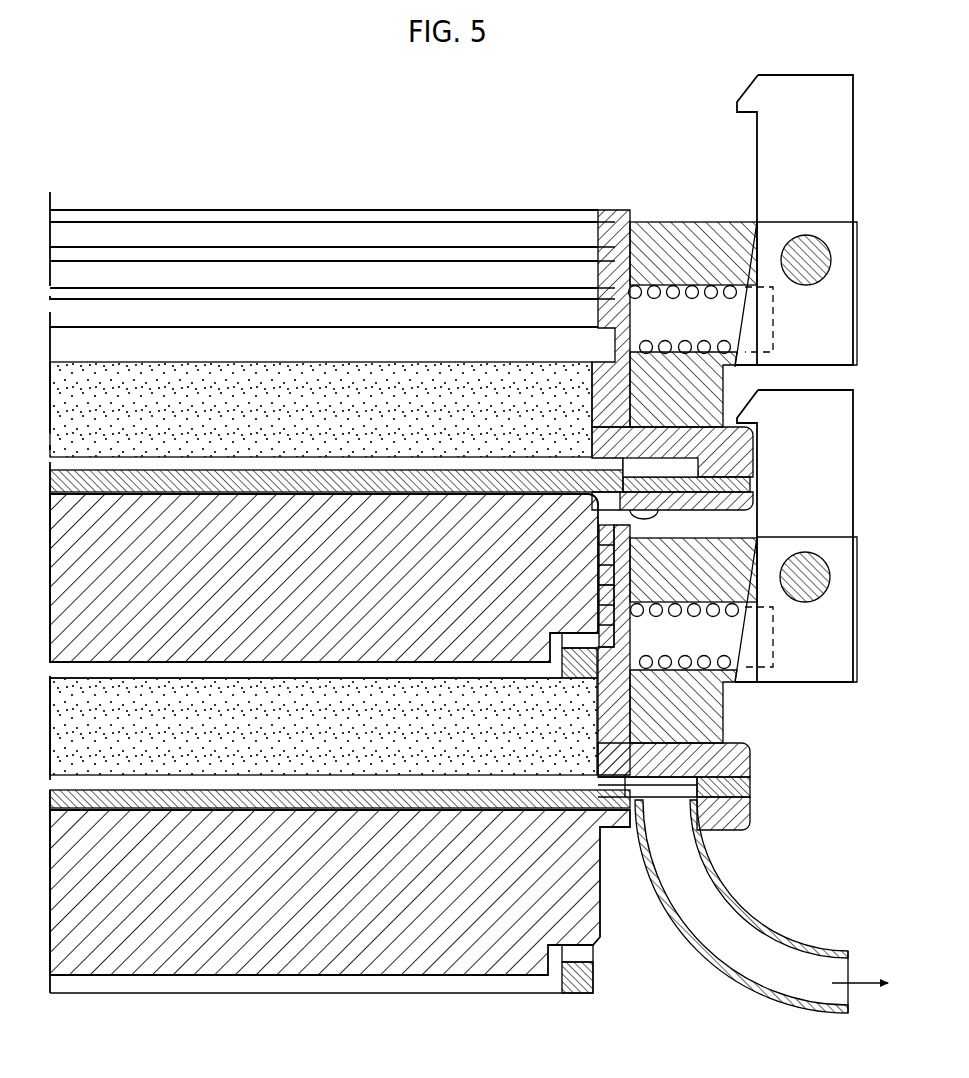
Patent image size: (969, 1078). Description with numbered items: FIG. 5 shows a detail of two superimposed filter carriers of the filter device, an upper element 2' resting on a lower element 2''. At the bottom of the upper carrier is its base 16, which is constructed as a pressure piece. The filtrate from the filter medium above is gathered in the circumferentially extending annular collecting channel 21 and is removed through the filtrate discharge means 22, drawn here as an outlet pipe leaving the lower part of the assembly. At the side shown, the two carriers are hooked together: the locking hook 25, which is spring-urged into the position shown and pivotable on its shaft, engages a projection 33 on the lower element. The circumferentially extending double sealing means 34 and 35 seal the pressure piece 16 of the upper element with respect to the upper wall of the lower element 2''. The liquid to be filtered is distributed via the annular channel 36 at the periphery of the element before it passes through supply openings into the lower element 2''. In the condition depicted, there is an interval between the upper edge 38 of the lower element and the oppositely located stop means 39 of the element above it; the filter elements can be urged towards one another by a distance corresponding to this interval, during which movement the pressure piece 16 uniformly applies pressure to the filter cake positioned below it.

The upper filter carrier 2' is at (724, 251).
The lower filter carrier 2'' is at (752, 610).
The base 16 is at (92, 590).
The annular collecting channel 21 is at (700, 782).
The filtrate discharge means 22 is at (710, 893).
The locking hook 25 is at (830, 466).
The projection 33 is at (753, 450).
The double sealing means 34 is at (630, 558).
The double sealing means 35 is at (597, 590).
The annular channel 36 is at (608, 638).
The upper edge 38 is at (532, 472).
The stop means 39 is at (623, 500).